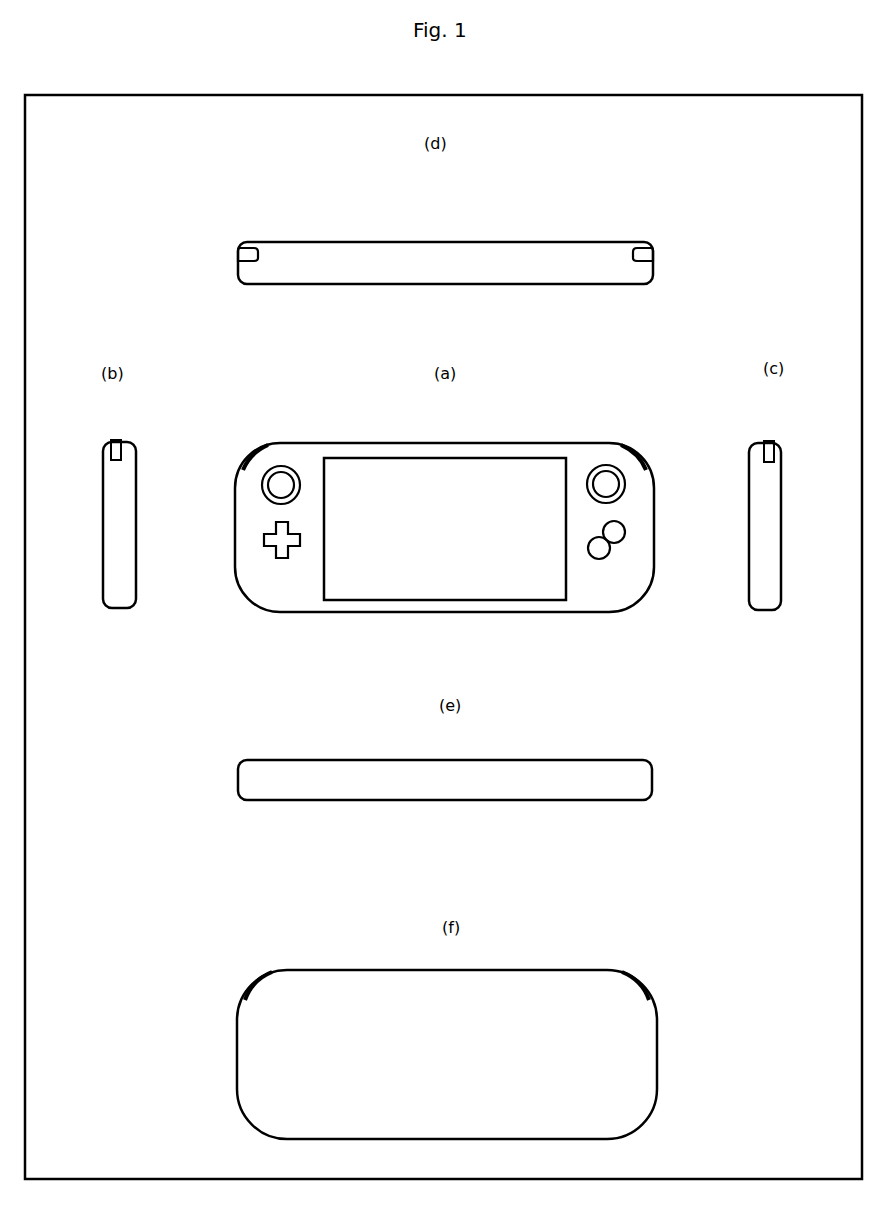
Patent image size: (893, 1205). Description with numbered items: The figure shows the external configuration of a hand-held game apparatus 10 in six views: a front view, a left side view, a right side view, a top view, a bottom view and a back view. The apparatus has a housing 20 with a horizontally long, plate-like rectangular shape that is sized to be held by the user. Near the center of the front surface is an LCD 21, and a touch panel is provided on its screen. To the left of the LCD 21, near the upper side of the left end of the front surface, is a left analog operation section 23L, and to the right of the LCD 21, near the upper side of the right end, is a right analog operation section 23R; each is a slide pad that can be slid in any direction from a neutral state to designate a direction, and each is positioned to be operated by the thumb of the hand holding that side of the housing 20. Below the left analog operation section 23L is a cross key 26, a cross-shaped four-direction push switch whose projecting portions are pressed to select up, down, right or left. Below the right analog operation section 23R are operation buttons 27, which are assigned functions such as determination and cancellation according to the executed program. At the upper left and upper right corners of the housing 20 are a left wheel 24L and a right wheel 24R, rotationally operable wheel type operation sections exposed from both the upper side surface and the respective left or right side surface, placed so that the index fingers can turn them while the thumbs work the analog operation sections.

The hand-held game apparatus 10 is at (544, 204).
The housing 20 is at (365, 443).
The LCD 21 is at (550, 458).
The left analog operation section 23L is at (285, 467).
The right analog operation section 23R is at (603, 466).
The left wheel 24L is at (238, 252).
The right wheel 24R is at (653, 252).
The cross key 26 is at (265, 540).
The operation buttons 27 is at (634, 527).